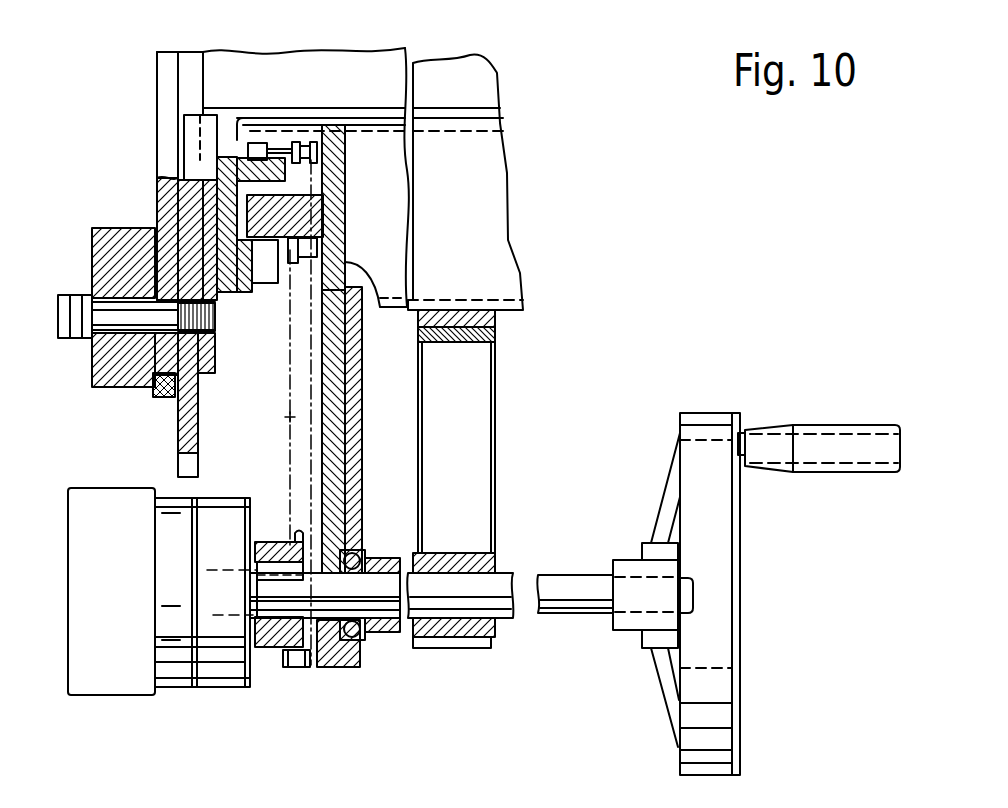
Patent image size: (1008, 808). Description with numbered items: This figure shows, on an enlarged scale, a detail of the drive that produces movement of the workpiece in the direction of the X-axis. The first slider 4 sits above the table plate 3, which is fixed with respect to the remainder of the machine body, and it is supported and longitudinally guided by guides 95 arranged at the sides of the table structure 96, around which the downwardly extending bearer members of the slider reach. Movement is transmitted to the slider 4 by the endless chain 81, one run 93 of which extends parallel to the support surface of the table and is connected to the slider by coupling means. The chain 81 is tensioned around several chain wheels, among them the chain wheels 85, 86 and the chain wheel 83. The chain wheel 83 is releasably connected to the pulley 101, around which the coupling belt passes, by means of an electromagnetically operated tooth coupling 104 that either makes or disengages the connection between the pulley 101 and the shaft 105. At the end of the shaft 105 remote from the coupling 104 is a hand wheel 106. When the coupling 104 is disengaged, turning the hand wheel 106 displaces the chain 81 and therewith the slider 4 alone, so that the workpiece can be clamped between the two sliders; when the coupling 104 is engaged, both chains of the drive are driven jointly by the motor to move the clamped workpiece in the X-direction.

The first slider 4 is at (277, 73).
The table plate 3 is at (507, 123).
The run of the chain 93 is at (305, 152).
The guides 95 is at (300, 216).
The chain wheel 85 is at (305, 250).
The chain wheel 86 is at (307, 247).
The endless chain 81 is at (288, 417).
The chain wheel 83 is at (270, 647).
The table structure 96 is at (332, 653).
The pulley 101 is at (220, 667).
The electromagnetically operated tooth coupling 104 is at (102, 677).
The shaft 105 is at (553, 597).
The hand wheel 106 is at (717, 537).